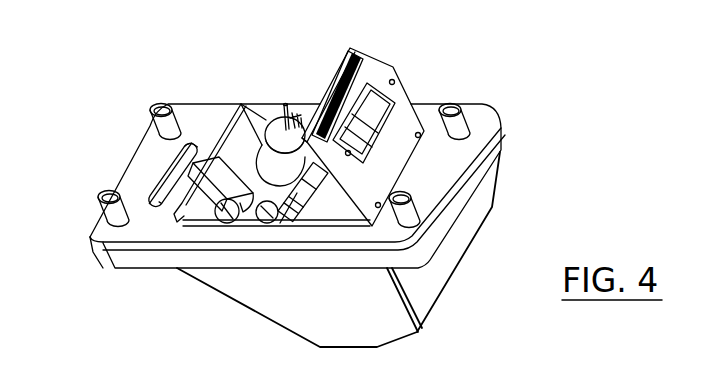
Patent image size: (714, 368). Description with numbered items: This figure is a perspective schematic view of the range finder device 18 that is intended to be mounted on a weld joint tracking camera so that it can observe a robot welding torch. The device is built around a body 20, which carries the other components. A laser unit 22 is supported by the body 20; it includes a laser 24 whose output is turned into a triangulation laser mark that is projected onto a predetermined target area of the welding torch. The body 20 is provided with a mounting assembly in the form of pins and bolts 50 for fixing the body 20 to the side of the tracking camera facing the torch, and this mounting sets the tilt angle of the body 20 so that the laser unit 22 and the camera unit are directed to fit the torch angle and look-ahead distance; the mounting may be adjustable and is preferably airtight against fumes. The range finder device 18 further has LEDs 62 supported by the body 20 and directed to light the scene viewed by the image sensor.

The range finder device 18 is at (521, 208).
The body 20 is at (468, 139).
The laser unit 22 is at (276, 100).
The laser 24 is at (240, 103).
The pins and bolts 50 is at (150, 112).
The LEDs 62 is at (223, 204).